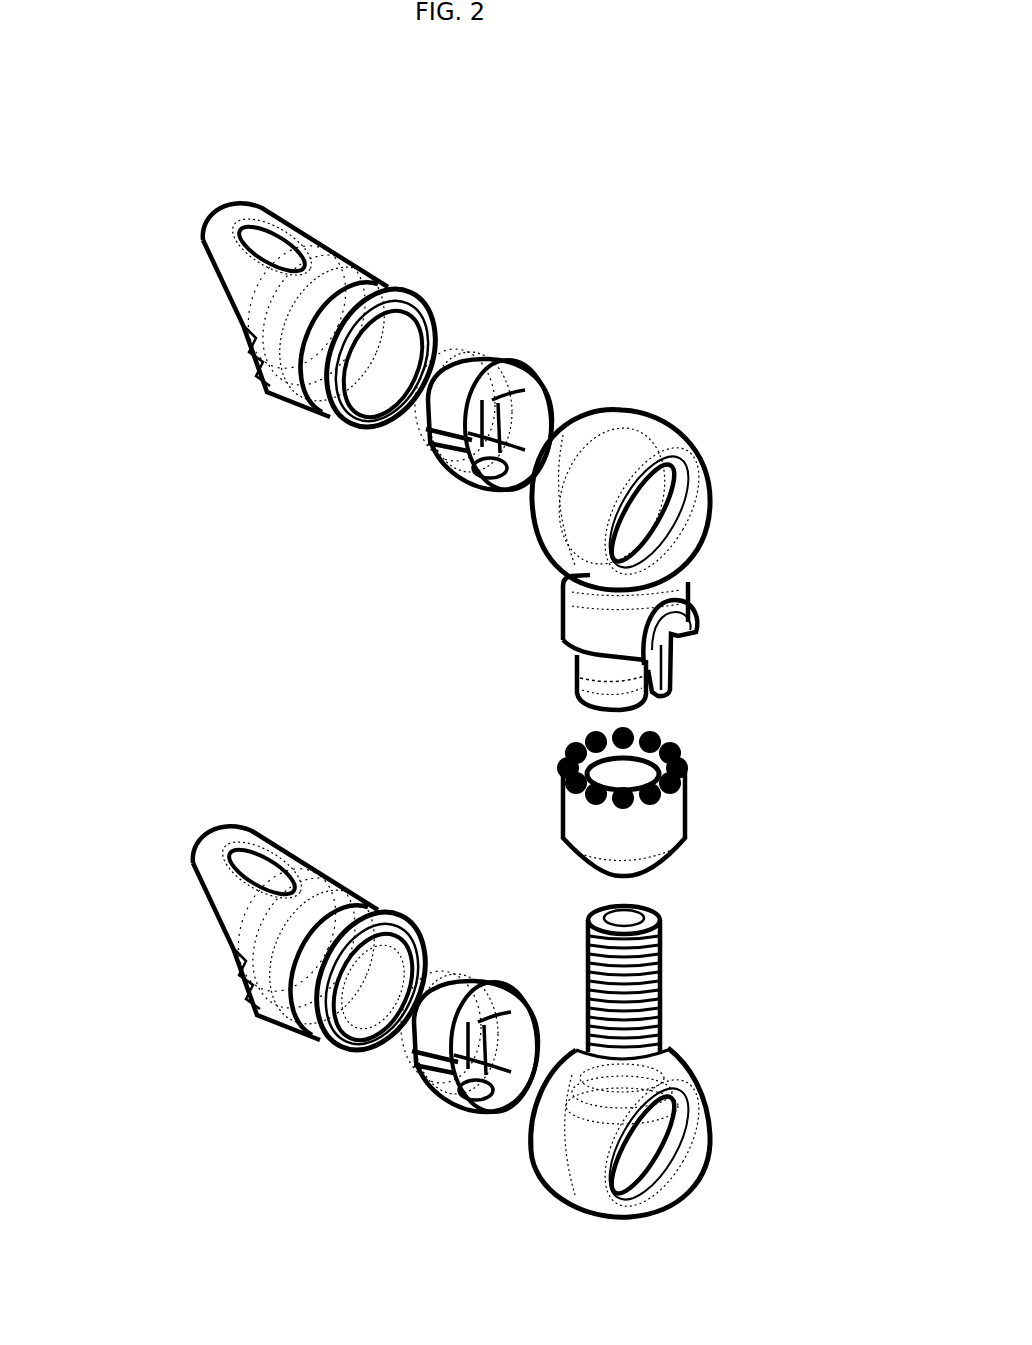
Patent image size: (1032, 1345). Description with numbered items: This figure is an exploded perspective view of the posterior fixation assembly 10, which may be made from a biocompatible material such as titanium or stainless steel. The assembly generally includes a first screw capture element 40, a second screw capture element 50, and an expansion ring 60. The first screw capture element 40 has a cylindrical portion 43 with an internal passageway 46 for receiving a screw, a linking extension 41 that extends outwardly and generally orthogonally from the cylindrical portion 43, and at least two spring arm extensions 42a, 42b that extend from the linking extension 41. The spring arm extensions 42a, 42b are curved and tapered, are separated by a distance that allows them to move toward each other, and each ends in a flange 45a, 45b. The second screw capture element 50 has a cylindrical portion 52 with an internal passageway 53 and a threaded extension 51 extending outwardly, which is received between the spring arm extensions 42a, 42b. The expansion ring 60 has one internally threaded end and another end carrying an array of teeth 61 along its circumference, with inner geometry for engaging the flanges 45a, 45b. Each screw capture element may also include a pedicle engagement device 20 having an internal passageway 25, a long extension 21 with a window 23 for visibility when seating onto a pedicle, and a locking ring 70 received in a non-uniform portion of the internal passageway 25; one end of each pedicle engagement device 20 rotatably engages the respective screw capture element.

The posterior fixation assembly 10 is at (742, 202).
The pedicle engagement device 20 is at (226, 440).
The long extension 21 is at (222, 229).
The window 23 is at (284, 250).
The internal passageway 25 is at (357, 980).
The first screw capture element 40 is at (742, 474).
The linking extension 41 is at (586, 604).
The spring arm extension 42a is at (590, 668).
The spring arm extension 42b is at (680, 647).
The cylindrical portion 43 is at (640, 452).
The flange 45a is at (592, 683).
The flange 45b is at (674, 674).
The internal passageway 46 is at (626, 519).
The second screw capture element 50 is at (690, 1222).
The threaded extension 51 is at (660, 982).
The cylindrical portion 52 is at (582, 1169).
The internal passageway 53 is at (632, 1146).
The expansion ring 60 is at (722, 810).
The teeth 61 is at (566, 766).
The locking ring 70 is at (500, 362).